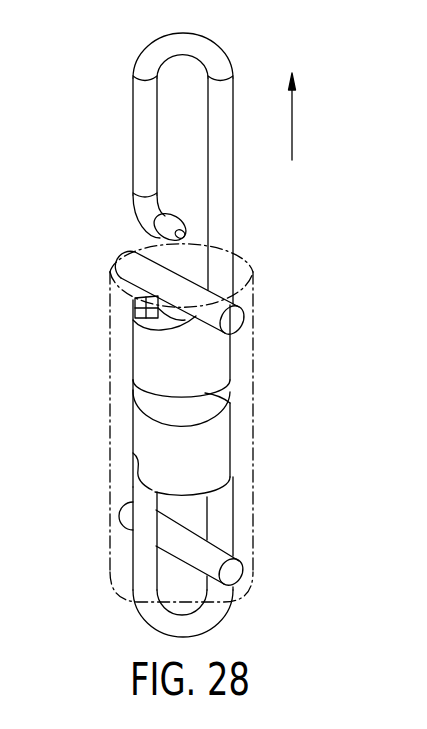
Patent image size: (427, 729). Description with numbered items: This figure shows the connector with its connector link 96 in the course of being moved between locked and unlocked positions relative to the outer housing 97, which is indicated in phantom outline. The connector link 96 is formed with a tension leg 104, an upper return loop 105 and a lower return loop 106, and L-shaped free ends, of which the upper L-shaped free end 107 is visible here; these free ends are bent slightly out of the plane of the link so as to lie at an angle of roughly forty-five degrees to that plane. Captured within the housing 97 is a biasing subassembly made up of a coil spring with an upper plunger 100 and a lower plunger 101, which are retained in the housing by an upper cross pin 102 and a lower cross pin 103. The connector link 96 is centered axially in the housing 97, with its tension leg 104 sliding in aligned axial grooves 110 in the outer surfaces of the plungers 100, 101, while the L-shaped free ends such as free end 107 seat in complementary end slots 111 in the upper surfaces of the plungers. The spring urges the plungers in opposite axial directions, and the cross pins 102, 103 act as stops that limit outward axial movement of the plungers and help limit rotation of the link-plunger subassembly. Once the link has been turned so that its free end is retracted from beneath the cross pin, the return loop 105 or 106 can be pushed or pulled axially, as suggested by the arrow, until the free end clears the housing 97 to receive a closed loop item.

The connector link 96 is at (224, 222).
The outer housing 97 is at (253, 400).
The upper plunger 100 is at (135, 353).
The lower plunger 101 is at (147, 438).
The upper cross pin 102 is at (227, 322).
The lower cross pin 103 is at (207, 557).
The tension leg 104 is at (220, 268).
The upper return loop 105 is at (197, 47).
The lower return loop 106 is at (205, 625).
The upper L-shaped free end 107 is at (168, 222).
The axial grooves 110 is at (220, 400).
The end slots 111 is at (130, 310).